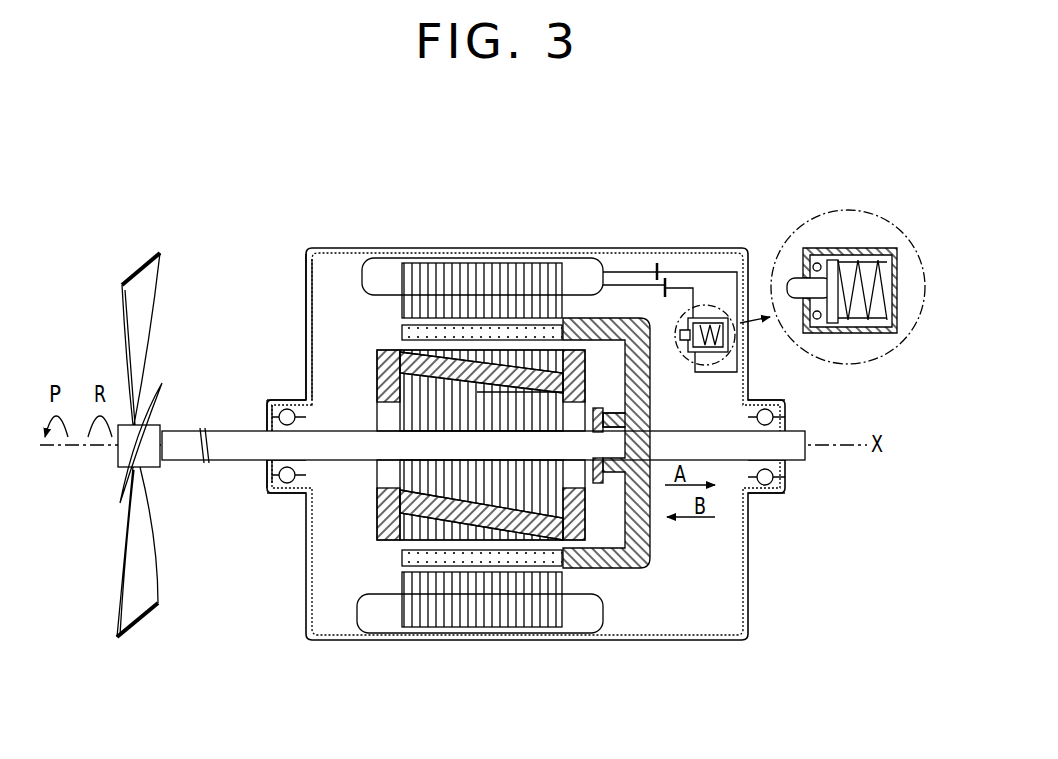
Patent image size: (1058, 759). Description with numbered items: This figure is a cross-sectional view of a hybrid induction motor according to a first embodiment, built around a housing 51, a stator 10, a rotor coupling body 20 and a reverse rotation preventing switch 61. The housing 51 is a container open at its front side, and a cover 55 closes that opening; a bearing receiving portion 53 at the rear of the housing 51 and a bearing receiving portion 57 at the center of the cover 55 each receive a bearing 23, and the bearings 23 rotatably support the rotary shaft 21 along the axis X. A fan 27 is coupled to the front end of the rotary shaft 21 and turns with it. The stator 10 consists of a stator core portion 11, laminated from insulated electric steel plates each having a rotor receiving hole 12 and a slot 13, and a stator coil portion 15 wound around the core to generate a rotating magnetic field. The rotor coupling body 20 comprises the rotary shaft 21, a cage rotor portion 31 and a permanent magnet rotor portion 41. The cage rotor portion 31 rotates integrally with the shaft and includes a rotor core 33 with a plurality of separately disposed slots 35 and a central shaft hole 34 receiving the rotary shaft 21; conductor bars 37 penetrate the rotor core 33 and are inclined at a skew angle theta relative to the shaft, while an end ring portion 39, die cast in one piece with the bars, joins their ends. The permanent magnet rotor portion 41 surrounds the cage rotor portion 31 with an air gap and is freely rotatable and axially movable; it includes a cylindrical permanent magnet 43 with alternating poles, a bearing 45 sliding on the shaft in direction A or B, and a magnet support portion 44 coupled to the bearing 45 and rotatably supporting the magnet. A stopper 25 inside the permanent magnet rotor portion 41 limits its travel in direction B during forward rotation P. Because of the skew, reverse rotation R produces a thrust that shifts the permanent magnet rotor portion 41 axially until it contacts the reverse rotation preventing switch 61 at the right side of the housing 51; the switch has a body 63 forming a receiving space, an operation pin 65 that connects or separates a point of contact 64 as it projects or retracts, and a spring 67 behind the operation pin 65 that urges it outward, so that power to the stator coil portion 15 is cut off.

The stator 10 is at (562, 152).
The stator core portion 11 is at (423, 185).
The rotor receiving hole 12 is at (467, 322).
The slot 13 is at (433, 273).
The stator coil portion 15 is at (580, 263).
The rotor coupling body 20 is at (620, 315).
The rotary shaft 21 is at (795, 455).
The bearings 23 is at (267, 480).
The stopper 25 is at (603, 413).
The fan 27 is at (135, 268).
The cage rotor portion 31 is at (242, 508).
The rotor core 33 is at (406, 418).
The shaft hole 34 is at (420, 438).
The slots 35 is at (442, 385).
The conductor bar 37 is at (377, 540).
The end ring portion 39 is at (378, 512).
The permanent magnet rotor portion 41 is at (583, 697).
The permanent magnet 43 is at (483, 575).
The magnet support portion 44 is at (553, 568).
The bearing 45 is at (617, 462).
The housing 51 is at (747, 590).
The bearing receiving portion 53 is at (778, 485).
The cover 55 is at (307, 268).
The bearing receiving portion 57 is at (270, 410).
The reverse rotation preventing switch 61 is at (712, 303).
The body 63 is at (860, 250).
The point of contact 64 is at (818, 263).
The operation pin 65 is at (793, 250).
The spring 67 is at (883, 257).